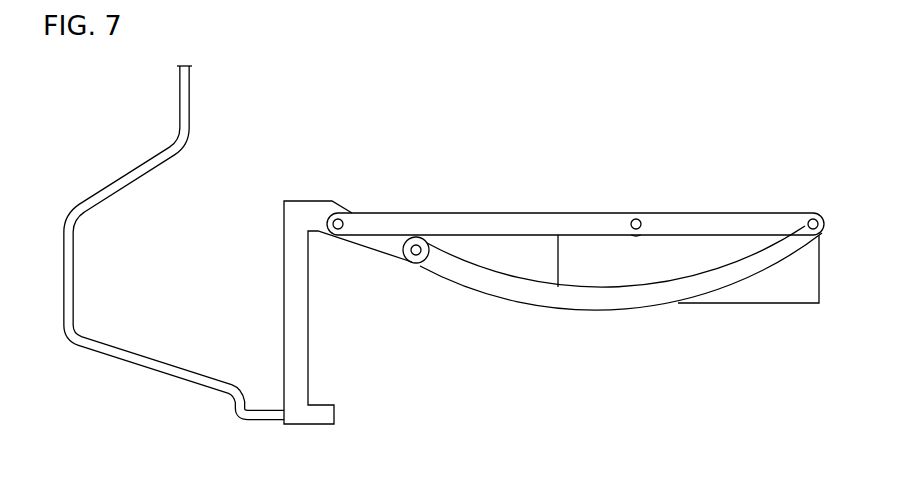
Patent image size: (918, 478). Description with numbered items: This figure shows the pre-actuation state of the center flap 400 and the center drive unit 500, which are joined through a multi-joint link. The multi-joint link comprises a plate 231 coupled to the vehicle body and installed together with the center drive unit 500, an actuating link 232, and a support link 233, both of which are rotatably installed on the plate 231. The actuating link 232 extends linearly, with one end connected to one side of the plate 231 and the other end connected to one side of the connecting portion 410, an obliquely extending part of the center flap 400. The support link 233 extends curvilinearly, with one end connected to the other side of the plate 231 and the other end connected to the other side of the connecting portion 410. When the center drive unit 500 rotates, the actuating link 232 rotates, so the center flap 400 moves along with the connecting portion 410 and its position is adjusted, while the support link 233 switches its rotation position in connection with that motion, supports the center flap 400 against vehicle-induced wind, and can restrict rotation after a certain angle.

The plate 231 is at (705, 214).
The actuating link 232 is at (505, 214).
The support link 233 is at (593, 310).
The center flap 400 is at (292, 302).
The connecting portion 410 is at (387, 253).
The center drive unit 500 is at (773, 292).